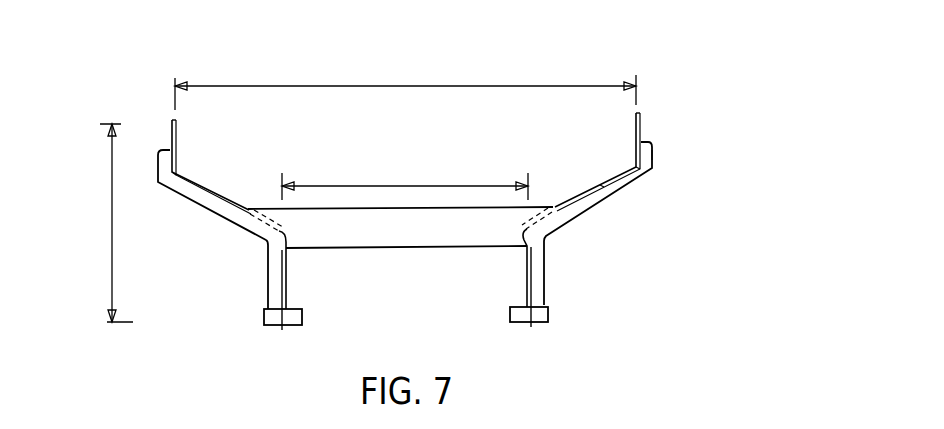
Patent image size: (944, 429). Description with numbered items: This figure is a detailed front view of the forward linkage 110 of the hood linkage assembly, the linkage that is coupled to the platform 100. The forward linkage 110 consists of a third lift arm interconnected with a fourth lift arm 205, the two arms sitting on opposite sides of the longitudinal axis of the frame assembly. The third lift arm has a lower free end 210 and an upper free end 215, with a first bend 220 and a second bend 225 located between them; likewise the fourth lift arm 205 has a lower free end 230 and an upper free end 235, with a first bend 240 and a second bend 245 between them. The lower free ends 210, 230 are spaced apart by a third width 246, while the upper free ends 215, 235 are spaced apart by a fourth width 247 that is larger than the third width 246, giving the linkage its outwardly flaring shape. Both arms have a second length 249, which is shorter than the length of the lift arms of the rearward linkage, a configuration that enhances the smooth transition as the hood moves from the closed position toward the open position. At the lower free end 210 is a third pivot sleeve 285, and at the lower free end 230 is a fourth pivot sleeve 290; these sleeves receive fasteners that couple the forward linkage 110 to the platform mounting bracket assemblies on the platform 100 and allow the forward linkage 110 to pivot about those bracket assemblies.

The platform 100 is at (222, 170).
The forward linkage 110 is at (690, 136).
The fourth lift arm 205 is at (588, 164).
The lower free end 210 is at (240, 325).
The upper free end 215 is at (156, 121).
The first bend 220 is at (248, 256).
The second bend 225 is at (183, 170).
The lower free end 230 is at (556, 325).
The upper free end 235 is at (644, 112).
The first bend 240 is at (553, 247).
The second bend 245 is at (628, 160).
The third width 246 is at (407, 183).
The fourth width 247 is at (401, 86).
The second length 249 is at (110, 198).
The third pivot sleeve 285 is at (294, 326).
The fourth pivot sleeve 290 is at (517, 323).